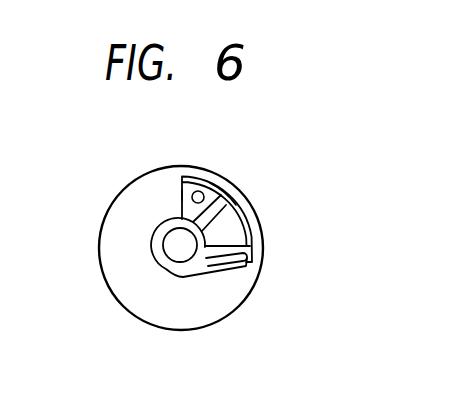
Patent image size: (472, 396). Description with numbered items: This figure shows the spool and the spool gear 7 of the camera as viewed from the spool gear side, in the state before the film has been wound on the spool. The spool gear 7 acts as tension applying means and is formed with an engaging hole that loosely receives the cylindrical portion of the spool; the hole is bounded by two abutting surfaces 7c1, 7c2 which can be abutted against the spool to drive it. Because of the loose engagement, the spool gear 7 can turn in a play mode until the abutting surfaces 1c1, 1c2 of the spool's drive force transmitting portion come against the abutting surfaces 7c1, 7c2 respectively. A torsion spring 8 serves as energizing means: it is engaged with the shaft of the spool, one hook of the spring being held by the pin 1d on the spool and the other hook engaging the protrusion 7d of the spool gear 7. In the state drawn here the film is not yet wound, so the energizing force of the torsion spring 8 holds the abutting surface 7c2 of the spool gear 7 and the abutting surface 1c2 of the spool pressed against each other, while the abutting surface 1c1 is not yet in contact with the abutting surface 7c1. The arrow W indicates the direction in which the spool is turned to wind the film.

The spool gear 7 is at (102, 227).
The abutting surface 7c1 is at (237, 245).
The abutting surface 7c2 is at (182, 176).
The protrusion 7d is at (233, 268).
The abutting surface 1c1 is at (229, 210).
The abutting surface 1c2 is at (192, 179).
The pin 1d is at (223, 186).
The torsion spring 8 is at (231, 285).
The direction of spool rotation for winding W is at (80, 282).